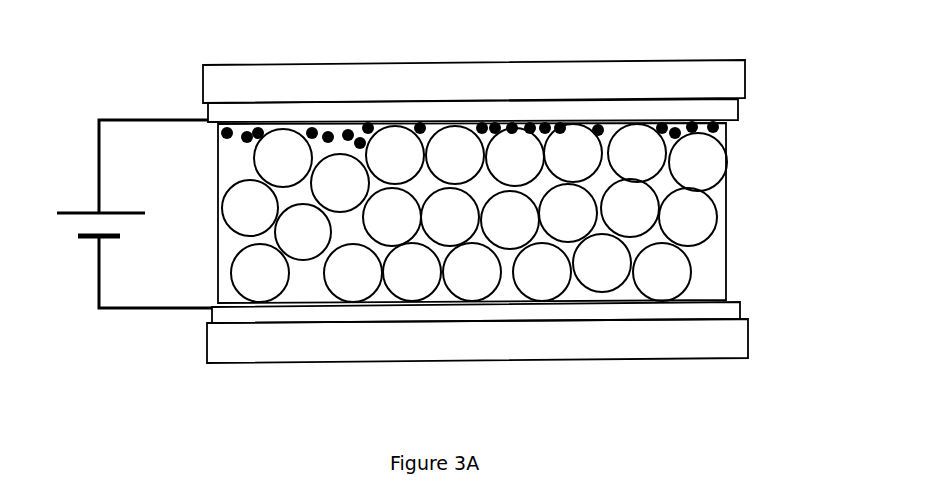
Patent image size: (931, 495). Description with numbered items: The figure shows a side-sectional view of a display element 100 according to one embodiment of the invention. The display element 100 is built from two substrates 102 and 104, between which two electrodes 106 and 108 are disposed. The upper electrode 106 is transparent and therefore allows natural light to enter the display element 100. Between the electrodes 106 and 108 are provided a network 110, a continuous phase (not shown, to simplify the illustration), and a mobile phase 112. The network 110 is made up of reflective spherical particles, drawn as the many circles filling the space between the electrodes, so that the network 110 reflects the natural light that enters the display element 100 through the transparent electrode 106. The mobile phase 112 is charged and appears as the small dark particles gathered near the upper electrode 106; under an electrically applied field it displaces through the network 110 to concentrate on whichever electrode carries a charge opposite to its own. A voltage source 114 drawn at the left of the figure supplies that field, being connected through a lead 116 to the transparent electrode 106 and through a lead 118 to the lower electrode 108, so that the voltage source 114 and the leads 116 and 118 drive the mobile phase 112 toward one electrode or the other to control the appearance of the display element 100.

The display element 100 is at (471, 378).
The substrate 102 is at (745, 72).
The substrate 104 is at (748, 345).
The electrode 106 is at (738, 110).
The electrode 108 is at (740, 308).
The network 110 is at (702, 218).
The mobile phase 112 is at (725, 132).
The voltage source 114 is at (75, 213).
The lead 116 is at (158, 118).
The lead 118 is at (163, 310).